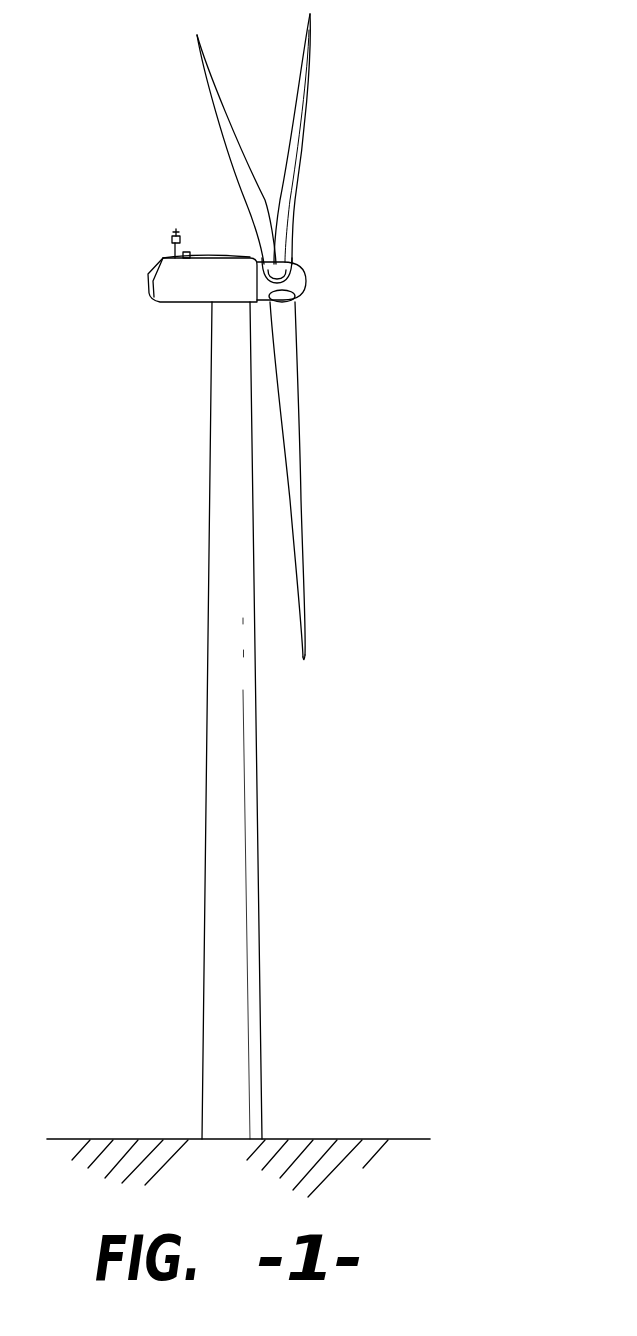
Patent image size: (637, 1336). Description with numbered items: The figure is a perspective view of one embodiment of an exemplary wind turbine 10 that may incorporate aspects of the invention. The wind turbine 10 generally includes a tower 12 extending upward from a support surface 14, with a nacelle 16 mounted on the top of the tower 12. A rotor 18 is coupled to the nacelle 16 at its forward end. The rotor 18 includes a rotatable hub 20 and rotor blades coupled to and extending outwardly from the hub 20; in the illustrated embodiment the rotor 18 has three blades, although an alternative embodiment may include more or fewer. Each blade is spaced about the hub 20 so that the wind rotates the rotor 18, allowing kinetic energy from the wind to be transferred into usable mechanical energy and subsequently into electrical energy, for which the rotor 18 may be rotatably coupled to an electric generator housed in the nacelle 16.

The wind turbine 10 is at (418, 120).
The tower 12 is at (217, 835).
The support surface 14 is at (328, 1139).
The nacelle 16 is at (188, 305).
The rotor 18 is at (326, 289).
The rotatable hub 20 is at (301, 280).